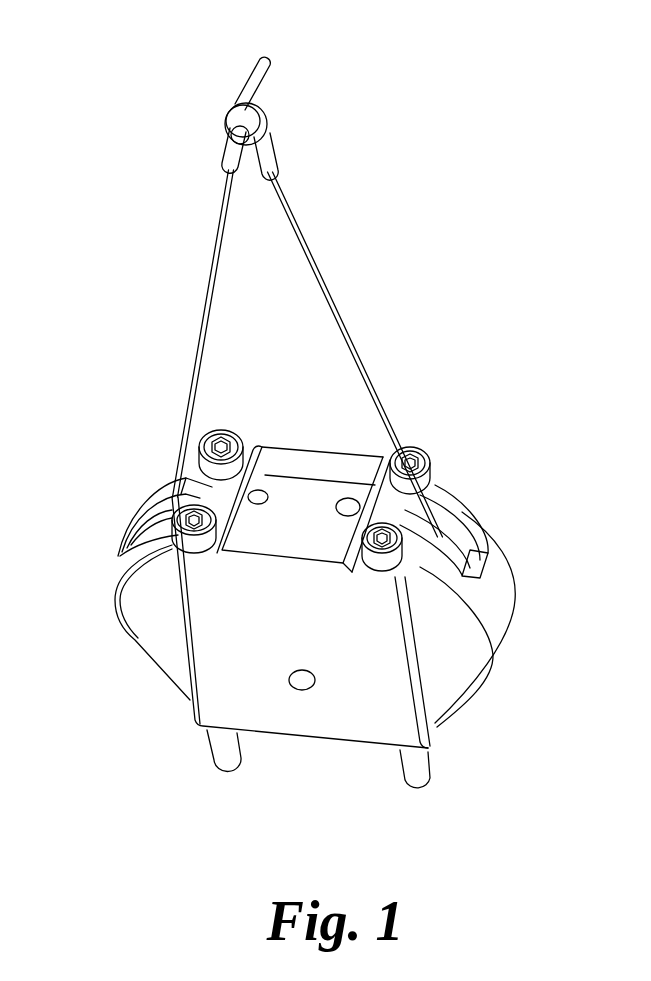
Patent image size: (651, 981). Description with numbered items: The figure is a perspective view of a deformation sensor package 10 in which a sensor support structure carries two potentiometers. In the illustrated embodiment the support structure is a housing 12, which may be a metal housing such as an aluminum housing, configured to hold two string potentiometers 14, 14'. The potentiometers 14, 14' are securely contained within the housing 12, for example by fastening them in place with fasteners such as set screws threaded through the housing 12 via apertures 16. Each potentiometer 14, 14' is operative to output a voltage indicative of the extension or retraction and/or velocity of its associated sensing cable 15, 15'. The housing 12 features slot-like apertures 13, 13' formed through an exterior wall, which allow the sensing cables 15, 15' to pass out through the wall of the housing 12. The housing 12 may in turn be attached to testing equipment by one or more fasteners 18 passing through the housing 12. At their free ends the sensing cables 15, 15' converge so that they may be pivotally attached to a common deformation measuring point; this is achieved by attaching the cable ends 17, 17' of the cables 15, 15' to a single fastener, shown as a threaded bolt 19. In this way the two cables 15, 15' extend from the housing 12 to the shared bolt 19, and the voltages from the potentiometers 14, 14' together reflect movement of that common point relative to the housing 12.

The sensor package 10 is at (472, 403).
The housing 12 is at (467, 650).
The slot-like aperture 13 is at (119, 507).
The slot-like aperture 13' is at (481, 495).
The string potentiometer 14 is at (141, 493).
The string potentiometer 14' is at (479, 520).
The sensing cable 15 is at (183, 333).
The sensing cable 15' is at (355, 354).
The aperture 16 is at (258, 495).
The cable end 17 is at (211, 138).
The cable end 17' is at (305, 142).
The fastener 18 is at (125, 550).
The threaded bolt 19 is at (275, 68).